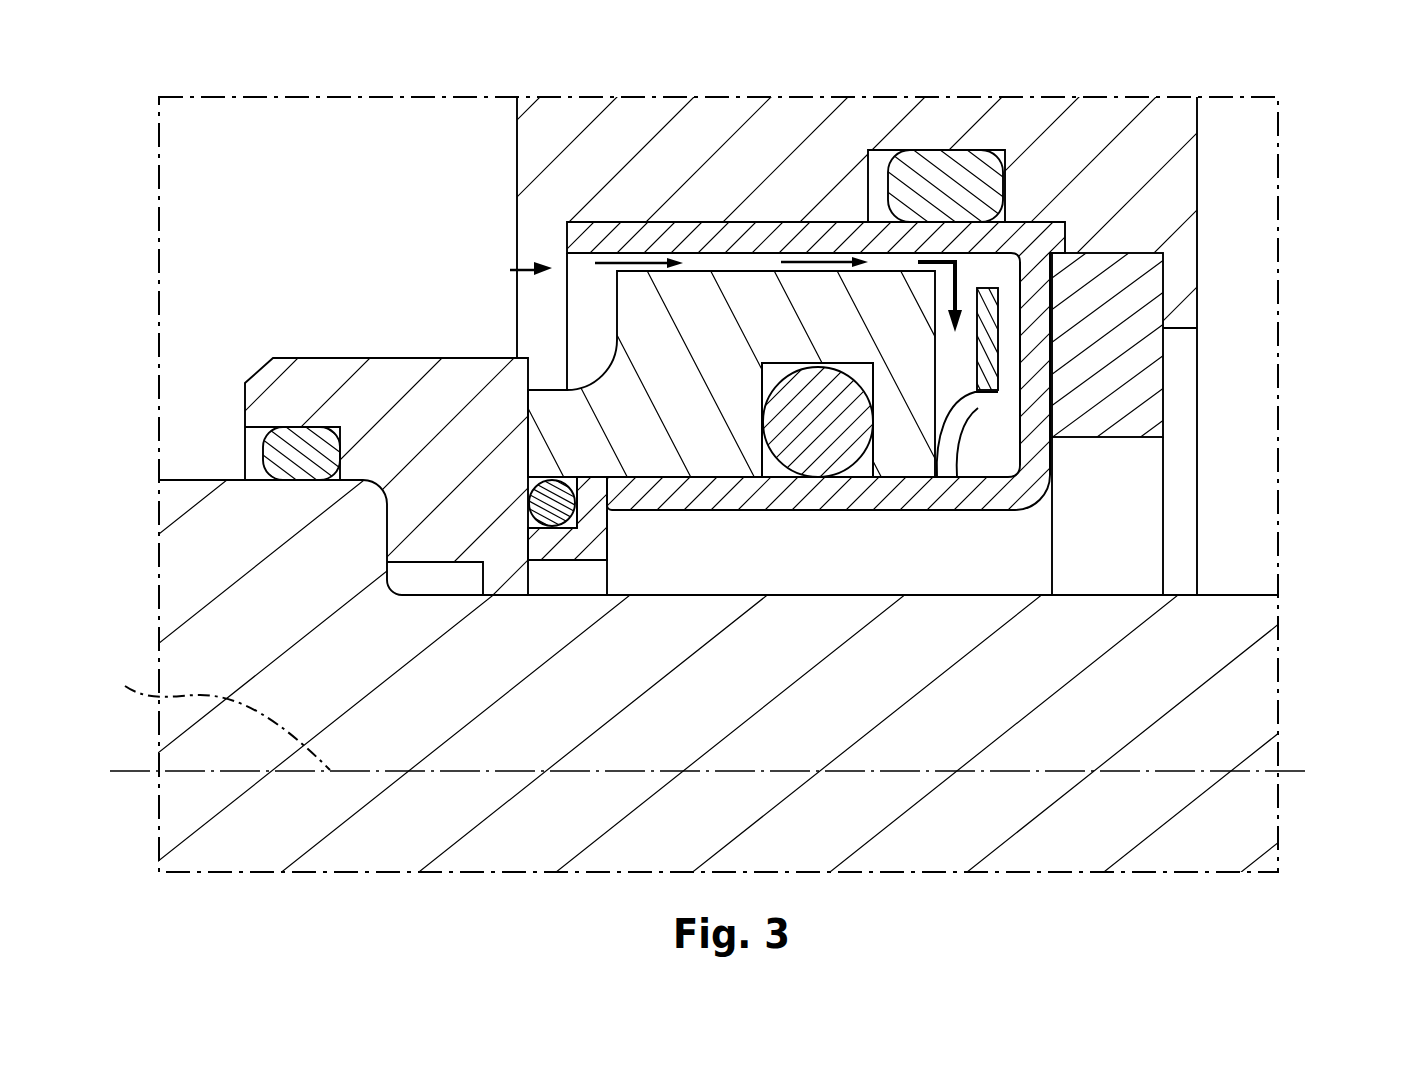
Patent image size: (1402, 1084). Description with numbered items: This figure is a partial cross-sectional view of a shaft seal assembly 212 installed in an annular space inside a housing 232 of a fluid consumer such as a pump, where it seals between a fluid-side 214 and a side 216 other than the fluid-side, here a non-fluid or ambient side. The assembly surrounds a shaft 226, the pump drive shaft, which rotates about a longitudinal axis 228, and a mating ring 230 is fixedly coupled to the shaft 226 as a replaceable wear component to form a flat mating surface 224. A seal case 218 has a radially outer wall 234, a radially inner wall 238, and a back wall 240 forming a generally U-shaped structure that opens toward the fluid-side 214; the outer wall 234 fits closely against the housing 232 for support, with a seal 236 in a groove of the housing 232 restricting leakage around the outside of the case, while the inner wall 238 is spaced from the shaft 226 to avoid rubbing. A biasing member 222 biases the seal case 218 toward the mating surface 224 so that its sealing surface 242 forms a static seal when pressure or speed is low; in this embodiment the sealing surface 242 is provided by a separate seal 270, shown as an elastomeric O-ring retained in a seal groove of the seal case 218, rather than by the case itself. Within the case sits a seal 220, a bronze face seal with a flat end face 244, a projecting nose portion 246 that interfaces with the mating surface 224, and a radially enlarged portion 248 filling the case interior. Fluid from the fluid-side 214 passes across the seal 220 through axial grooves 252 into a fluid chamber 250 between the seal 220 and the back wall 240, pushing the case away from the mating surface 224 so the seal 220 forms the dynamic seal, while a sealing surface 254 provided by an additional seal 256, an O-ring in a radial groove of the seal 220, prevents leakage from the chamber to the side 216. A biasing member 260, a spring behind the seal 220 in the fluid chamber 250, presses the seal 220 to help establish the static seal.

The shaft seal assembly 212 is at (512, 270).
The fluid-side 214 is at (278, 216).
The side other than the fluid-side 216 is at (995, 532).
The seal case 218 is at (703, 205).
The seal 220 is at (618, 392).
The biasing member 222 is at (1107, 300).
The mating surface 224 is at (383, 457).
The shaft 226 is at (420, 635).
The longitudinal axis 228 is at (211, 712).
The mating ring 230 is at (527, 440).
The housing 232 is at (1160, 213).
The radially outer wall 234 is at (700, 237).
The seal 236 is at (966, 185).
The radially inner wall 238 is at (723, 500).
The back wall 240 is at (1037, 458).
The sealing surface 242 is at (533, 510).
The flat end face 244 is at (527, 440).
The projecting nose portion 246 is at (582, 458).
The radially enlarged portion 248 is at (900, 463).
The fluid chamber 250 is at (980, 273).
The axial grooves 252 is at (700, 262).
The sealing surface 254 is at (820, 478).
The additional seal 256 is at (808, 362).
The biasing member 260 is at (987, 350).
The separate seal 270 is at (533, 512).